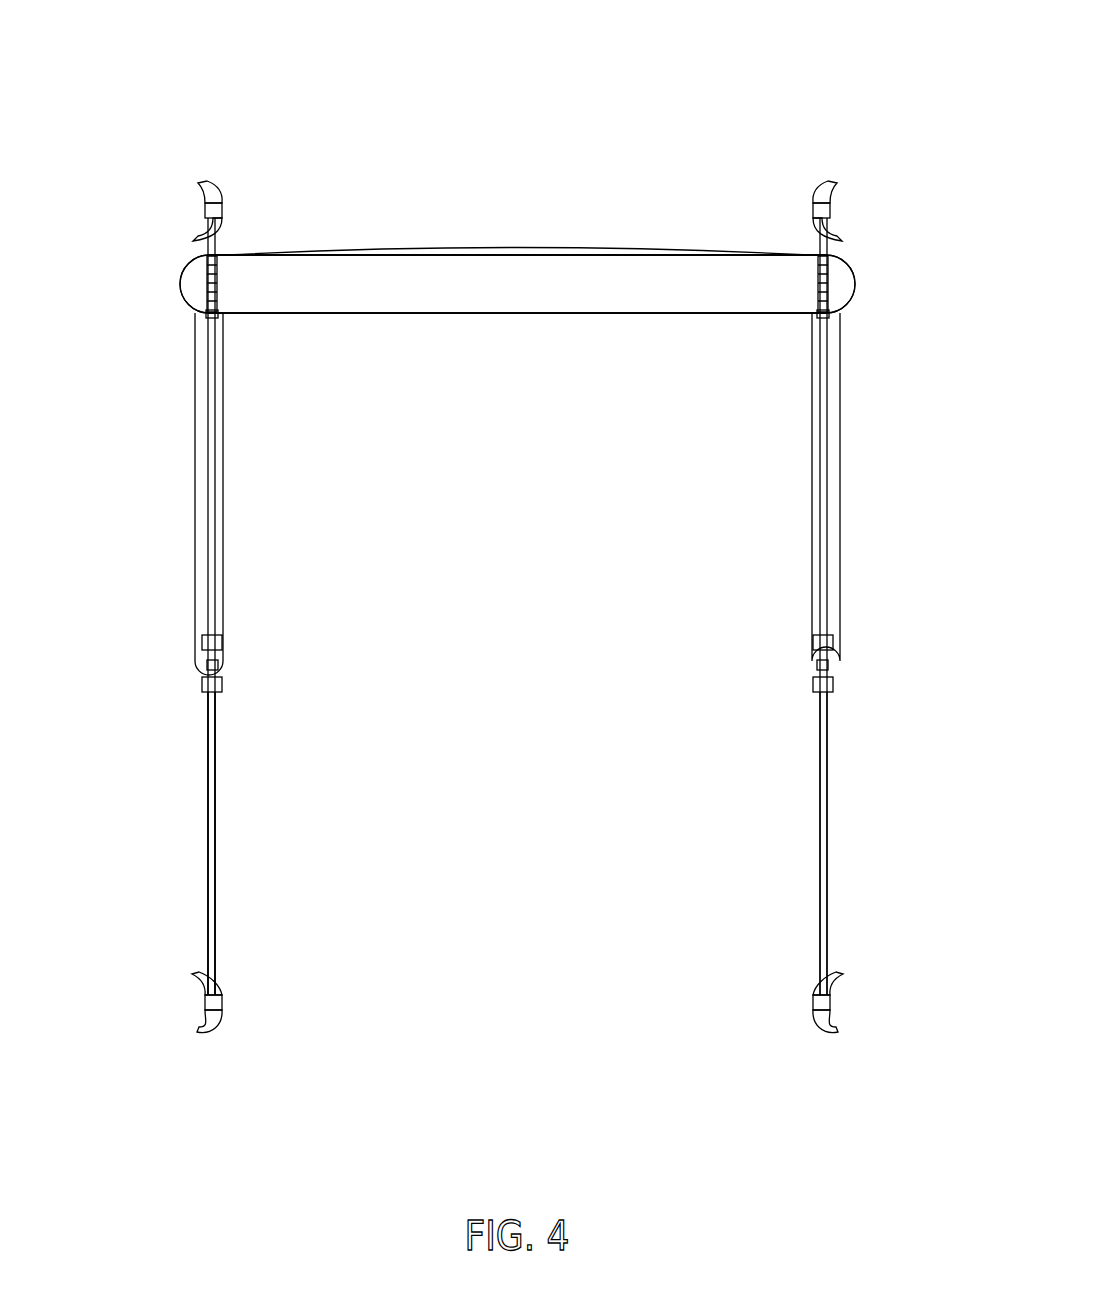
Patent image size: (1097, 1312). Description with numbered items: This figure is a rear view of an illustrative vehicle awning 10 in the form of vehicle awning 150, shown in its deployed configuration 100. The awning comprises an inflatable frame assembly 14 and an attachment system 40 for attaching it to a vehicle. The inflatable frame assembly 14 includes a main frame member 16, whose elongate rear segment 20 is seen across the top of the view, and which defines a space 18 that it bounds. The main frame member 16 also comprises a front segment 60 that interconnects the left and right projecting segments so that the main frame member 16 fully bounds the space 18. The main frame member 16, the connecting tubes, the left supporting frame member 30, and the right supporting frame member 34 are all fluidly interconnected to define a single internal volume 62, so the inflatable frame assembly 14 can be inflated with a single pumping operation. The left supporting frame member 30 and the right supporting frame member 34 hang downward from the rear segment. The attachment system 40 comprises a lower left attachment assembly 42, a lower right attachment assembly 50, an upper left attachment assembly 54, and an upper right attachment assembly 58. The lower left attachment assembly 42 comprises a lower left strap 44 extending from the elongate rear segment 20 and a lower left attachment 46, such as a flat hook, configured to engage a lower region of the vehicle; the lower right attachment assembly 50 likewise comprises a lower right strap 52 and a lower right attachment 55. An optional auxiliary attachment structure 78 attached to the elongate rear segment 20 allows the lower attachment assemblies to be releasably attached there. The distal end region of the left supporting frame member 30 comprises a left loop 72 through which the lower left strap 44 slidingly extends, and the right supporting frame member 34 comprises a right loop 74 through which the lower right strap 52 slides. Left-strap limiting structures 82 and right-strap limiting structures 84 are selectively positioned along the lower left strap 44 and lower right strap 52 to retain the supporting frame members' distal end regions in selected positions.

The vehicle awning 10 is at (913, 75).
The deployed configuration 100 is at (903, 110).
The vehicle awning 150 is at (815, 75).
The inflatable frame assembly 14 is at (725, 167).
The main frame member 16 is at (650, 250).
The space 18 is at (488, 325).
The elongate rear segment 20 is at (542, 305).
The front segment 60 is at (513, 250).
The single internal volume 62 is at (392, 268).
The auxiliary attachment structure 78 is at (210, 287).
The right supporting frame member 34 is at (195, 452).
The left supporting frame member 30 is at (840, 452).
The lower right attachment assembly 50 is at (203, 787).
The lower left attachment assembly 42 is at (832, 787).
The lower right strap 52 is at (208, 907).
The lower left strap 44 is at (827, 907).
The attachment system 40 is at (138, 905).
The right-strap limiting structures 84 is at (203, 642).
The left-strap limiting structures 82 is at (832, 642).
The right loop 74 is at (200, 668).
The left loop 72 is at (835, 668).
The upper right attachment assembly 58 is at (205, 212).
The upper left attachment assembly 54 is at (830, 212).
The lower right attachment 55 is at (200, 1015).
The lower left attachment 46 is at (835, 1015).